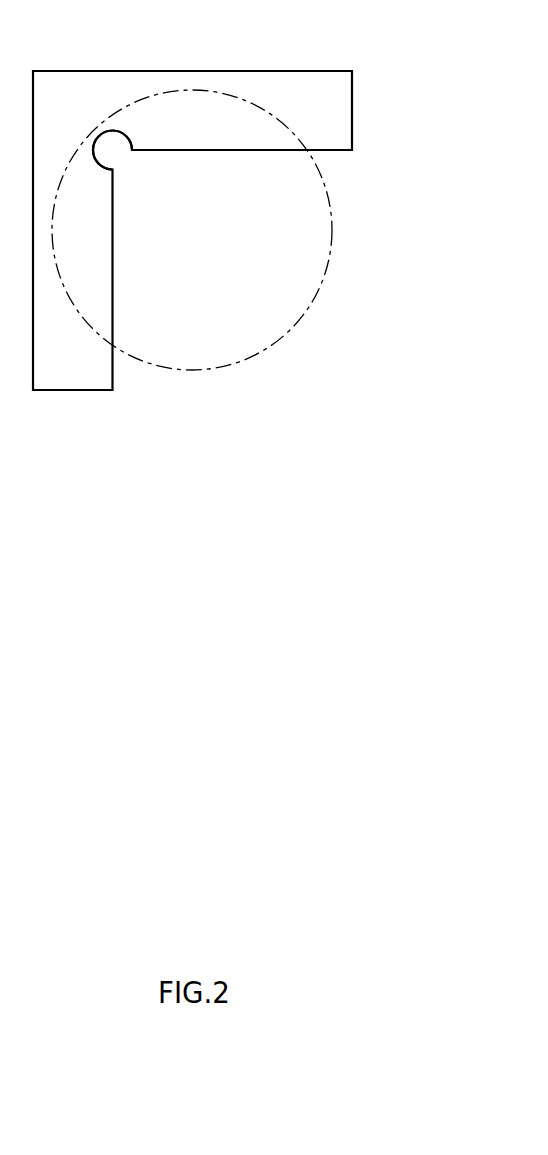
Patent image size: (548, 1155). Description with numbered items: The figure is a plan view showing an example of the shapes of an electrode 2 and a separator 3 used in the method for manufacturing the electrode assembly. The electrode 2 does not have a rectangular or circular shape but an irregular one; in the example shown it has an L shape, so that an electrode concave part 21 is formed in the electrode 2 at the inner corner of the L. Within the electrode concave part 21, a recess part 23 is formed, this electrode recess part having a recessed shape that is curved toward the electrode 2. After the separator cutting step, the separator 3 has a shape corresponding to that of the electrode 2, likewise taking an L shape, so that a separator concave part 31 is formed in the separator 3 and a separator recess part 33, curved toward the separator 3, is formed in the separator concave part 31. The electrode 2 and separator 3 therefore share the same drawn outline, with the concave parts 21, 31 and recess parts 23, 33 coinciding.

The electrode 2 is at (192, 196).
The separator 3 is at (311, 90).
The electrode concave part 21 is at (254, 230).
The separator concave part 31 is at (332, 228).
The electrode recess part 23 is at (165, 165).
The separator recess part 33 is at (97, 163).